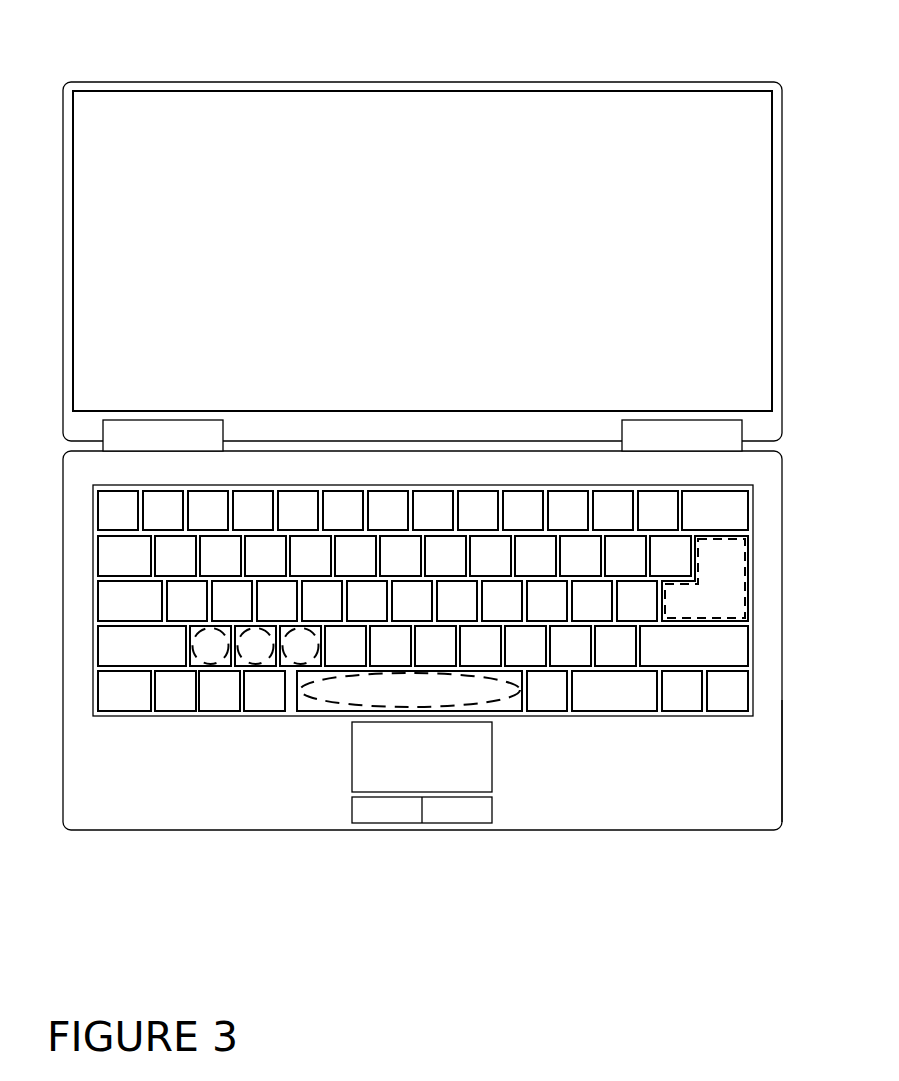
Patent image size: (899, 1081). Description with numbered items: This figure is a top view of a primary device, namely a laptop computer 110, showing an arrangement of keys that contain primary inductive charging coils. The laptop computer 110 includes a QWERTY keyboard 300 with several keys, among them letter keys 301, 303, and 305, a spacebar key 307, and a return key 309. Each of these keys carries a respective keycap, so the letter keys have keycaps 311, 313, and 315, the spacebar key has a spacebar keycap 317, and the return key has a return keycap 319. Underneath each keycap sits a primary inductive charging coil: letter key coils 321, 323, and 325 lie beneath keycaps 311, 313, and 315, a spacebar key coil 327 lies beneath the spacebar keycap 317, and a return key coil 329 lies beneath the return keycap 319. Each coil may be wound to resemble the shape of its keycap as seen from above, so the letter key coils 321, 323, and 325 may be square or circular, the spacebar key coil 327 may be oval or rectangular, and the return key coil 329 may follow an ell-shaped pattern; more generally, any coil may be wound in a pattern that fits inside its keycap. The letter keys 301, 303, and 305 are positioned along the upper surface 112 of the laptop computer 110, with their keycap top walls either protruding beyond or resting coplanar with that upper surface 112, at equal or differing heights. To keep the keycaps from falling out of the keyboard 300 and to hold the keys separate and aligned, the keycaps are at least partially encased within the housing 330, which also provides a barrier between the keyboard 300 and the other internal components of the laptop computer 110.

The laptop computer 110 is at (422, 241).
The upper surface 112 is at (608, 800).
The QWERTY keyboard 300 is at (421, 629).
The letter key 301 is at (211, 646).
The letter key 303 is at (256, 646).
The letter key 305 is at (301, 646).
The spacebar key 307 is at (410, 690).
The return key 309 is at (705, 578).
The keycap 311 is at (183, 627).
The keycap 313 is at (243, 628).
The keycap 315 is at (303, 629).
The spacebar keycap 317 is at (421, 735).
The return keycap 319 is at (751, 658).
The letter key coil 321 is at (177, 709).
The letter key coil 323 is at (225, 711).
The letter key coil 325 is at (274, 713).
The spacebar key coil 327 is at (402, 735).
The return key coil 329 is at (705, 658).
The housing 330 is at (775, 830).